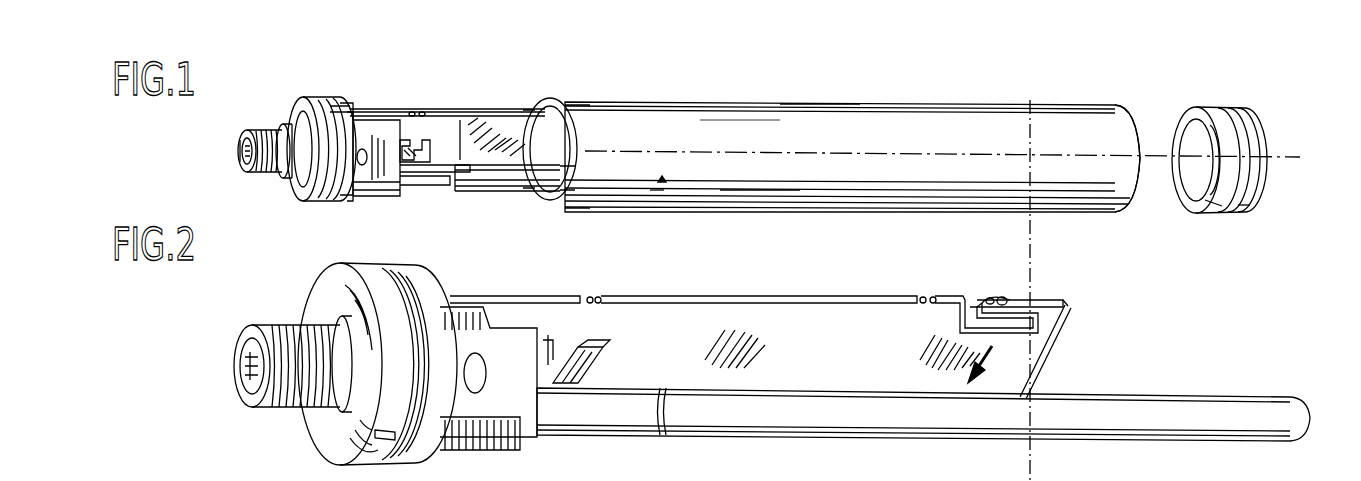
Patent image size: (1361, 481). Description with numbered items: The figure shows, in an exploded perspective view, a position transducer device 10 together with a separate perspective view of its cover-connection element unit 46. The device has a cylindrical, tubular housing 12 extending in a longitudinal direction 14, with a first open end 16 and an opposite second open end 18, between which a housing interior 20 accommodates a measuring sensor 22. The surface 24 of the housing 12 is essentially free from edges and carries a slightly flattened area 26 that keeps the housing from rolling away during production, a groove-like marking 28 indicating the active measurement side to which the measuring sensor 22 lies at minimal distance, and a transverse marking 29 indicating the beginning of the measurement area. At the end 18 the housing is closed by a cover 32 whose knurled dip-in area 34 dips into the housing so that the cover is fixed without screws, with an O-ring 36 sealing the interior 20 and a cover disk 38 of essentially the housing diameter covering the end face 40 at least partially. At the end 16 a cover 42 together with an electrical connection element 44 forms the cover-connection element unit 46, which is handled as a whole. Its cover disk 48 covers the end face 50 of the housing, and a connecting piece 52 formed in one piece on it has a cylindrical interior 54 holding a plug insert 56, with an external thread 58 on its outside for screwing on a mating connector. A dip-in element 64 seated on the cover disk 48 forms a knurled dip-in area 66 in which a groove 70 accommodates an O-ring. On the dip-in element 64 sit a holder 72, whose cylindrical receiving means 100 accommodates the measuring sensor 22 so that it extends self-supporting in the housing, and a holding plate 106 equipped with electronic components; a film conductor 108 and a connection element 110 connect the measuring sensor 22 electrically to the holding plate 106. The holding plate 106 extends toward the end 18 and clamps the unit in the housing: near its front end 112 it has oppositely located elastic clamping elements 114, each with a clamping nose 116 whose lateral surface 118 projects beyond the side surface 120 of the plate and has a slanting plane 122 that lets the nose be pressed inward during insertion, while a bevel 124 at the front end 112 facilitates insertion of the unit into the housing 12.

In FIG. 1, the position transducer device 10 is at (905, 90).
In FIG. 1, the housing 12 is at (962, 140).
In FIG. 1, the longitudinal direction 14 is at (1254, 158).
In FIG. 1, the first open end 16 is at (567, 104).
In FIG. 1, the second open end 18 is at (1128, 108).
In FIG. 1, the housing interior 20 is at (578, 195).
In FIG. 1, the measuring sensor 22 is at (525, 188).
In FIG. 2, the measuring sensor 22 is at (873, 420).
In FIG. 1, the surface 24 is at (735, 130).
In FIG. 1, the flattened area 26 is at (808, 102).
In FIG. 1, the marking 28 is at (760, 195).
In FIG. 1, the transverse marking 29 is at (664, 188).
In FIG. 1, the cover 32 is at (1245, 214).
In FIG. 1, the dip-in area 34 is at (1212, 212).
In FIG. 1, the O-ring 36 is at (1216, 112).
In FIG. 1, the cover disk 38 is at (1250, 118).
In FIG. 1, the end face 40 is at (1128, 202).
In FIG. 1, the cover 42 is at (314, 198).
In FIG. 1, the electrical connection element 44 is at (275, 177).
In FIG. 1, the cover-connection element unit 46 is at (326, 97).
In FIG. 2, the cover-connection element unit 46 is at (692, 282).
In FIG. 1, the cover disk 48 is at (296, 196).
In FIG. 2, the cover disk 48 is at (325, 296).
In FIG. 1, the end face 50 is at (530, 108).
In FIG. 1, the connecting piece 52 is at (279, 128).
In FIG. 2, the connecting piece 52 is at (300, 408).
In FIG. 1, the cylindrical interior 54 is at (241, 165).
In FIG. 1, the plug insert 56 is at (256, 134).
In FIG. 2, the plug insert 56 is at (238, 376).
In FIG. 1, the external thread 58 is at (283, 188).
In FIG. 2, the external thread 58 is at (262, 322).
In FIG. 1, the dip-in element 64 is at (352, 107).
In FIG. 1, the dip-in area 66 is at (368, 196).
In FIG. 2, the groove 70 is at (432, 298).
In FIG. 1, the holder 72 is at (425, 190).
In FIG. 2, the holder 72 is at (538, 433).
In FIG. 2, the cylindrical receiving means 100 is at (660, 425).
In FIG. 1, the holding plate 106 is at (470, 140).
In FIG. 2, the holding plate 106 is at (785, 312).
In FIG. 1, the film conductor 108 is at (408, 140).
In FIG. 2, the film conductor 108 is at (548, 352).
In FIG. 1, the connection element 110 is at (462, 182).
In FIG. 2, the connection element 110 is at (604, 345).
In FIG. 2, the front end 112 is at (1060, 335).
In FIG. 2, the clamping element 114 is at (1015, 297).
In FIG. 2, the clamping nose 116 is at (984, 300).
In FIG. 2, the lateral surface 118 is at (1003, 296).
In FIG. 2, the side surface 120 is at (880, 297).
In FIG. 2, the slanting plane 122 is at (1060, 296).
In FIG. 2, the bevel 124 is at (1070, 306).